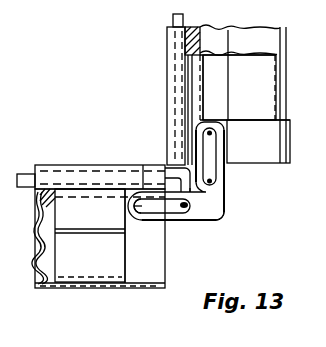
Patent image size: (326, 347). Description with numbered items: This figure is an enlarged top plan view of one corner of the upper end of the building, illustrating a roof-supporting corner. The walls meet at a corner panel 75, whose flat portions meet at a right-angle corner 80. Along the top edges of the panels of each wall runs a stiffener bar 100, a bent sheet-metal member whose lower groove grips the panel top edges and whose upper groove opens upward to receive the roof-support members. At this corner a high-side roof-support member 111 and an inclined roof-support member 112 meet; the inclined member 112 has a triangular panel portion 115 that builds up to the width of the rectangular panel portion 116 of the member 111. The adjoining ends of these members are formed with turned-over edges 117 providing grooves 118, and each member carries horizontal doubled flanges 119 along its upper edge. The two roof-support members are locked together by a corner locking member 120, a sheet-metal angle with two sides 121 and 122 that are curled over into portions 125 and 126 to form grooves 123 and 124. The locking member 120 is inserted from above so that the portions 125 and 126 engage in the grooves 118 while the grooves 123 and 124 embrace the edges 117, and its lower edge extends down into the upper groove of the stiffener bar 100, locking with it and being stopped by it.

The corner panel 75 is at (26, 163).
The right-angle corner 80 is at (174, 174).
The stiffener bar 100 is at (163, 101).
The roof-support member 111 is at (185, 132).
The roof-support member 112 is at (142, 181).
The triangular panel portion 115 is at (40, 215).
The rectangular panel portion 116 is at (197, 30).
The turned-over edge 117 is at (213, 155).
The groove 118 is at (214, 186).
The horizontal doubled flange 119 is at (92, 252).
The corner locking member 120 is at (233, 218).
The side 121 is at (226, 178).
The side 122 is at (190, 220).
The groove 123 is at (212, 131).
The groove 124 is at (136, 206).
The curled-over portion 125 is at (206, 165).
The curled-over portion 126 is at (155, 205).